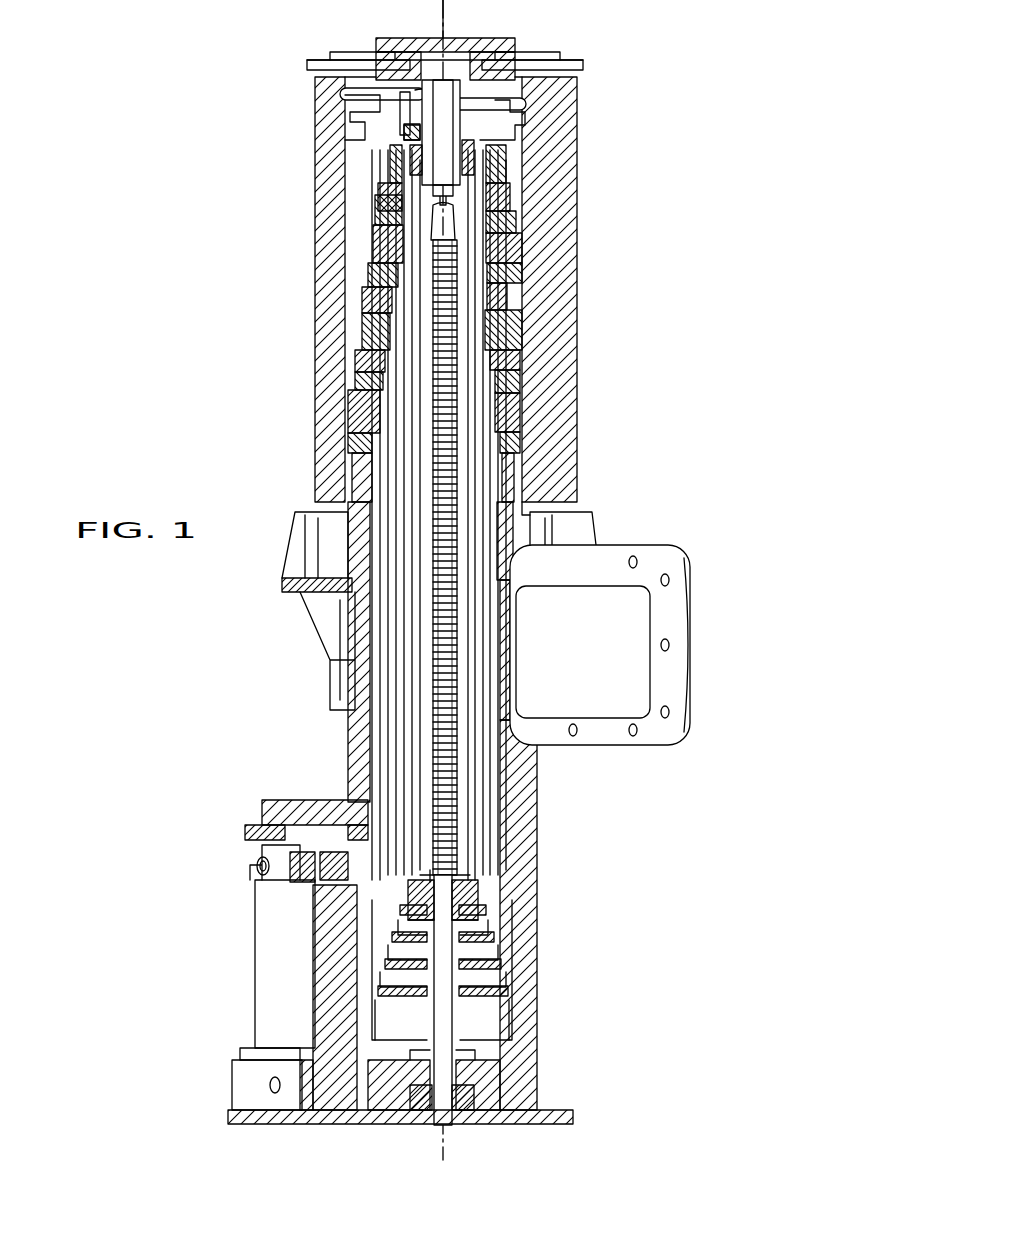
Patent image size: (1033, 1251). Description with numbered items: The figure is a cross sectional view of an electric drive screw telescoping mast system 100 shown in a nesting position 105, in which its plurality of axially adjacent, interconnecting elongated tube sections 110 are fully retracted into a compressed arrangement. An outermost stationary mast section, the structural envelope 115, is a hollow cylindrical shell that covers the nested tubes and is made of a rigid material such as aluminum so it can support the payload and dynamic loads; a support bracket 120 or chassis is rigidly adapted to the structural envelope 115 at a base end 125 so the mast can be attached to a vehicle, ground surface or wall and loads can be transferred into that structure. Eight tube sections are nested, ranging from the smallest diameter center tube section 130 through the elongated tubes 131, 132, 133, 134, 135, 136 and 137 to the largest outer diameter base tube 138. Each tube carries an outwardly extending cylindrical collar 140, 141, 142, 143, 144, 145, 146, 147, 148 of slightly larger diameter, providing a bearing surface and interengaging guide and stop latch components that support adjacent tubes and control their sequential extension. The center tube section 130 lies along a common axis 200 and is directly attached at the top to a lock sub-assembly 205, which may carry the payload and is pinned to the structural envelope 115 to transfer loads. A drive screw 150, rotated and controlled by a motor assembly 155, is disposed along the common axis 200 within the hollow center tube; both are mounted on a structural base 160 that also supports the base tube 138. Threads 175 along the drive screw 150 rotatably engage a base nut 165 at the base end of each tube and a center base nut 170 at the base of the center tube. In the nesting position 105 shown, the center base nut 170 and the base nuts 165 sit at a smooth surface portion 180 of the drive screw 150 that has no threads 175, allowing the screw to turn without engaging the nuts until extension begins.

The drive screw telescoping mast system 100 is at (648, 80).
The nesting position 105 is at (258, 45).
The elongated tube sections 110 is at (365, 760).
The structural envelope 115 is at (577, 258).
The support bracket 120 is at (692, 600).
The base end 125 is at (590, 520).
The center tube section 130 is at (505, 150).
The elongated tube 131 is at (500, 188).
The elongated tube section 132 is at (505, 228).
The elongated tube section 133 is at (500, 293).
The elongated tube section 134 is at (500, 338).
The elongated tube section 135 is at (500, 373).
The elongated tube section 136 is at (500, 412).
The elongated tube section 137 is at (500, 452).
The base tube 138 is at (500, 492).
The cylindrical collar 140 is at (405, 128).
The cylindrical collar 141 is at (395, 162).
The cylindrical collar 142 is at (380, 192).
The cylindrical collar 143 is at (382, 246).
The cylindrical collar 144 is at (370, 282).
The cylindrical collar 145 is at (360, 332).
The cylindrical collar 146 is at (348, 367).
The cylindrical collar 147 is at (352, 412).
The cylindrical collar 148 is at (350, 447).
The drive screw 150 is at (435, 690).
The motor assembly 155 is at (258, 917).
The structural base 160 is at (225, 1114).
The base nuts 165 is at (575, 905).
The center base nut 170 is at (470, 877).
The threads 175 is at (460, 800).
The smooth surface portion 180 is at (460, 900).
The common axis 200 is at (446, 14).
The lock sub-assembly 205 is at (405, 62).